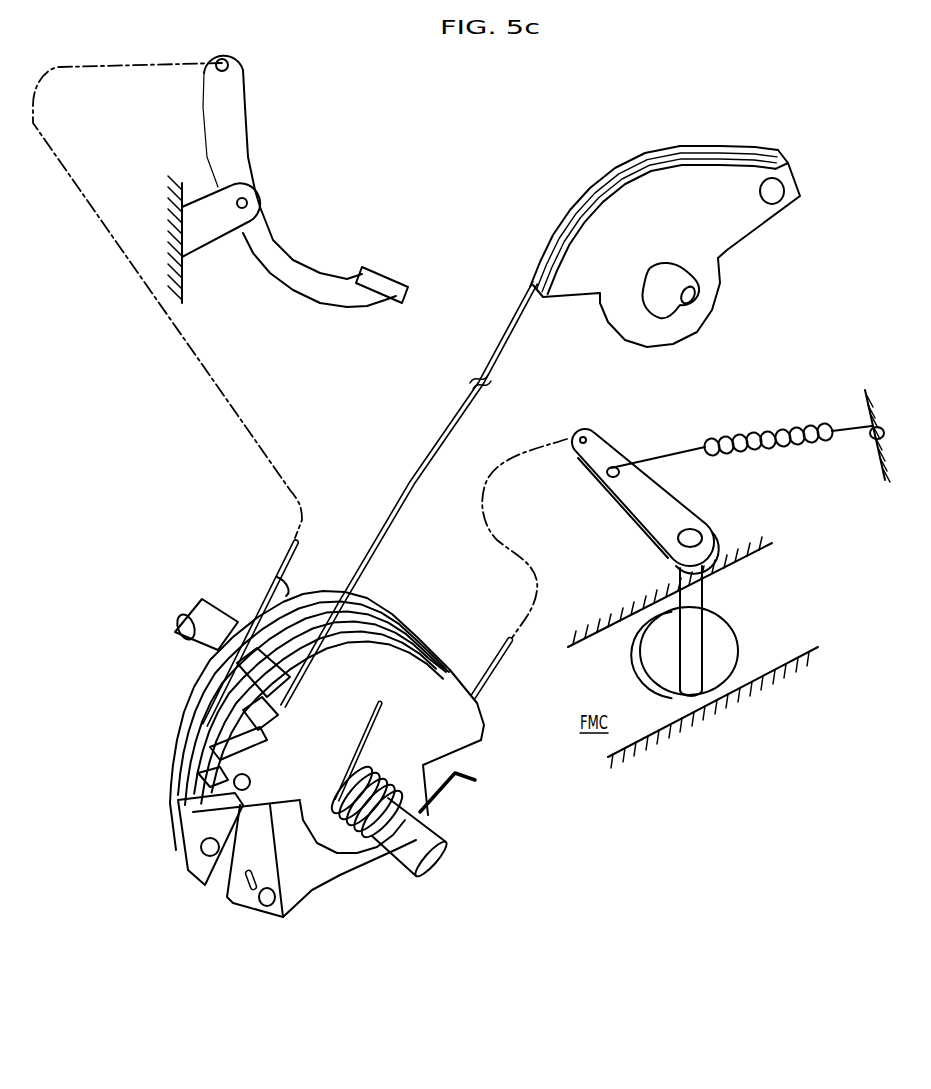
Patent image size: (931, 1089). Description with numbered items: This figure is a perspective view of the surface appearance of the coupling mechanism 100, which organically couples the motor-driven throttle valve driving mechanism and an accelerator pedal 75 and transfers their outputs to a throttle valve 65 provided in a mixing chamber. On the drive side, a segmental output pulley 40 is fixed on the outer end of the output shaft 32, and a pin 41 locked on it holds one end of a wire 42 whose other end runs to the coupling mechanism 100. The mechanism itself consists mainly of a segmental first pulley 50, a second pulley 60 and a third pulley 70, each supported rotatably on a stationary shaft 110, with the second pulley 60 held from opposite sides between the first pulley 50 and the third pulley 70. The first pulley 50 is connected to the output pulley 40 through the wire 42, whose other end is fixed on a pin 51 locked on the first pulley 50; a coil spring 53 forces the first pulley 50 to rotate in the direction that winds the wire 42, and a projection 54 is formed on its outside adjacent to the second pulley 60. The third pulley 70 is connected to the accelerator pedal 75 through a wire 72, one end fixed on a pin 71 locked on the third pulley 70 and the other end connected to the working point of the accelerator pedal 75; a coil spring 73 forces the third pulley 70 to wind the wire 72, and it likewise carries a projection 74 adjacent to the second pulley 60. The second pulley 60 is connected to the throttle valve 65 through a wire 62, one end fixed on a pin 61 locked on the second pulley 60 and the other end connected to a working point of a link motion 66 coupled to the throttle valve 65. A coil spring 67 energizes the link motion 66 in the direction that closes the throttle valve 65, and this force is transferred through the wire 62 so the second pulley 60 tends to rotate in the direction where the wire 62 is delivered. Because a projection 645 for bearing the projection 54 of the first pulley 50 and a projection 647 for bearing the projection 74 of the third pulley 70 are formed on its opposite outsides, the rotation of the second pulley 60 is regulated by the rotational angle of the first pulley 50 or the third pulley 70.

The wire 72 is at (122, 78).
The accelerator pedal 75 is at (285, 188).
The output pulley 40 is at (743, 220).
The pin 41 is at (777, 200).
The output shaft 32 is at (670, 277).
The wire 42 is at (505, 358).
The wire 62 is at (530, 460).
The link motion 66 is at (641, 505).
The throttle valve 65 is at (727, 635).
The coil spring 67 is at (785, 424).
The first pulley 50 is at (467, 735).
The projection 54 is at (263, 700).
The coupling mechanism 100 is at (442, 640).
The stationary shaft 110 is at (410, 853).
The coil spring 53 is at (347, 833).
The coil spring 73 is at (182, 620).
The projection 647 is at (257, 653).
The projection 645 is at (250, 693).
The third pulley 70 is at (177, 797).
The projection 74 is at (173, 802).
The pin 71 is at (182, 840).
The pin 51 is at (243, 797).
The second pulley 60 is at (323, 873).
The pin 61 is at (267, 906).